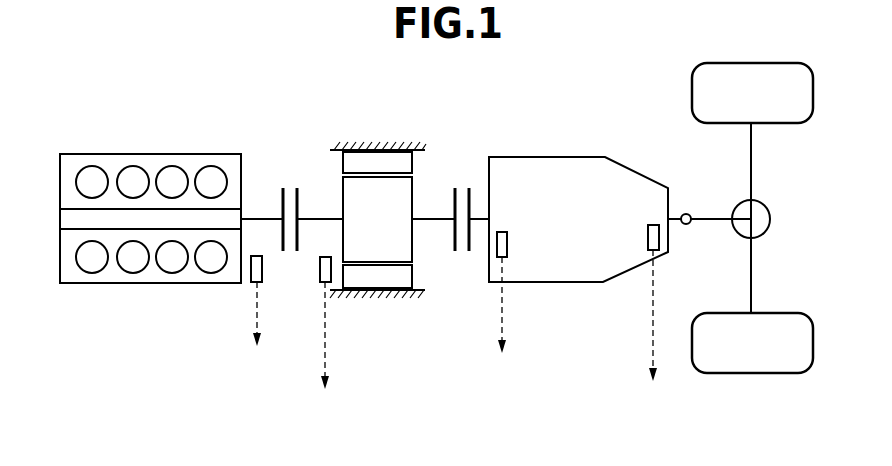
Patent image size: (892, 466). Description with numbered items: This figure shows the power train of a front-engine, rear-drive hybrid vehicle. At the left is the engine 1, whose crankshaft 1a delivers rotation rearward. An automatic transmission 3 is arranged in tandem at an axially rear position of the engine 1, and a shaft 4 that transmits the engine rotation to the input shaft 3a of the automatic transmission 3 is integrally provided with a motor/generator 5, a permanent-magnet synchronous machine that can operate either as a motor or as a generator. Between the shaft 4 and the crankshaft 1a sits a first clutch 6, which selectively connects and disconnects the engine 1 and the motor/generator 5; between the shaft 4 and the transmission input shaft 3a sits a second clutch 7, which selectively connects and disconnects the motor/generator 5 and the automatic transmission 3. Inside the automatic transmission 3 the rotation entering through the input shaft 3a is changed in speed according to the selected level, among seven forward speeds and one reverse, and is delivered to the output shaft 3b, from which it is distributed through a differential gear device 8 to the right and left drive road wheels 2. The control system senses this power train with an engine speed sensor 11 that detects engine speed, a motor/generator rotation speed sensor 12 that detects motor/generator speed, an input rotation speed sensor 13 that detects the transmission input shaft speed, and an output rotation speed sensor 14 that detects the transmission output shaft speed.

The engine 1 is at (120, 148).
The crankshaft 1a is at (267, 217).
The drive road wheels 2 is at (757, 62).
The automatic transmission 3 is at (555, 153).
The input shaft 3a is at (480, 217).
The output shaft 3b is at (673, 217).
The shaft 4 is at (437, 217).
The motor/generator 5 is at (365, 146).
The first clutch 6 is at (290, 181).
The second clutch 7 is at (462, 256).
The differential gear device 8 is at (770, 211).
The engine speed sensor 11 is at (255, 283).
The motor/generator rotation speed sensor 12 is at (323, 283).
The input rotation speed sensor 13 is at (503, 258).
The output rotation speed sensor 14 is at (652, 252).